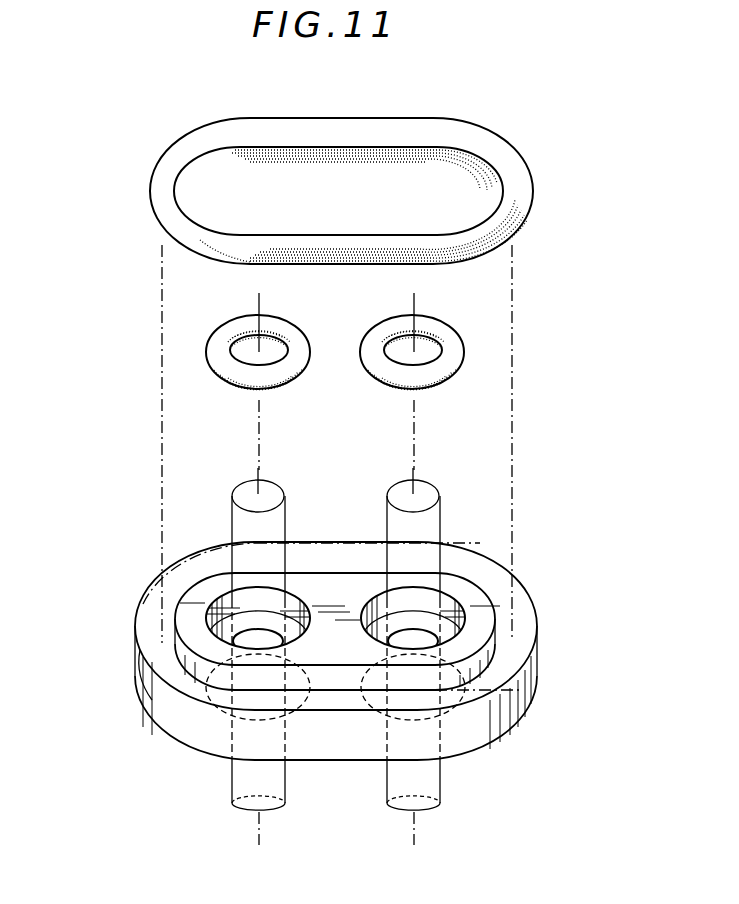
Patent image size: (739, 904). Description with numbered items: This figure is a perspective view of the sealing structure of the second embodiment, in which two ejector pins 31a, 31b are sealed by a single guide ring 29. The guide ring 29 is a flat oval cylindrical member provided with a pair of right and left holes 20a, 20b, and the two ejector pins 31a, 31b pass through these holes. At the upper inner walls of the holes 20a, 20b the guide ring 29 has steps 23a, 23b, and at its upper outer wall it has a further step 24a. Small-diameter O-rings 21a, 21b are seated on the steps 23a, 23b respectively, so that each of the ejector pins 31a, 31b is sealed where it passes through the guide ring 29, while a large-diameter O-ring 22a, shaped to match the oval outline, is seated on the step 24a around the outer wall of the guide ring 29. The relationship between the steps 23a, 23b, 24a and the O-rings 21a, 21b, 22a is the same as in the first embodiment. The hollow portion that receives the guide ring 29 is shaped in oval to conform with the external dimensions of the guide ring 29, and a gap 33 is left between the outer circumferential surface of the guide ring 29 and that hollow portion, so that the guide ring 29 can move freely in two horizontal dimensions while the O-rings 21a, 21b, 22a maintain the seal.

The large-diameter O-ring 22a is at (477, 140).
The small-diameter O-ring 21a is at (292, 377).
The small-diameter O-ring 21b is at (450, 378).
The step 23a is at (225, 607).
The step 23b is at (450, 610).
The hole 20a is at (263, 640).
The hole 20b is at (416, 637).
The gap 33 is at (147, 612).
The guide ring 29 is at (535, 672).
The step 24a is at (145, 657).
The ejector pin 31a is at (254, 795).
The ejector pin 31b is at (413, 795).